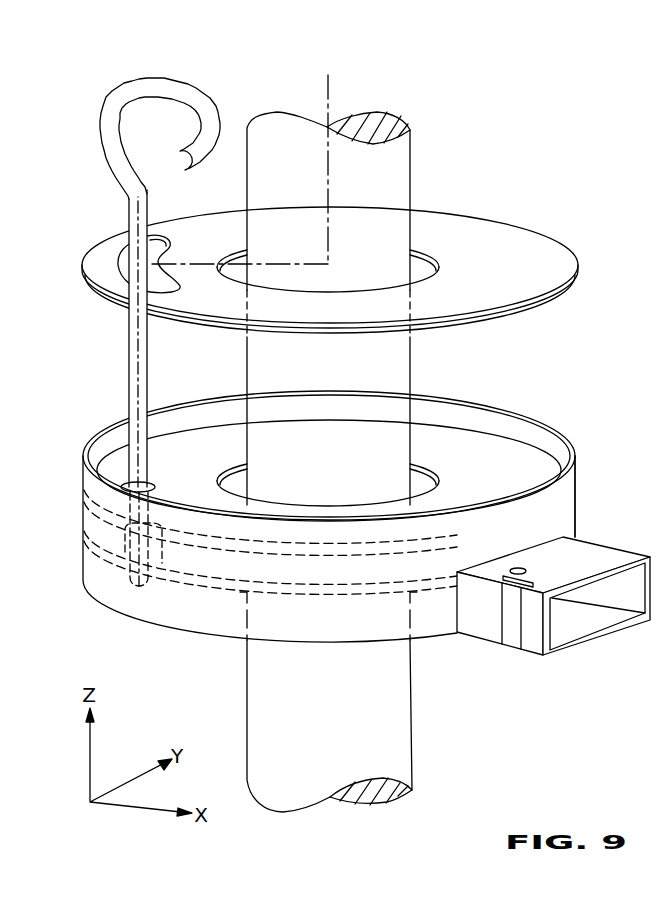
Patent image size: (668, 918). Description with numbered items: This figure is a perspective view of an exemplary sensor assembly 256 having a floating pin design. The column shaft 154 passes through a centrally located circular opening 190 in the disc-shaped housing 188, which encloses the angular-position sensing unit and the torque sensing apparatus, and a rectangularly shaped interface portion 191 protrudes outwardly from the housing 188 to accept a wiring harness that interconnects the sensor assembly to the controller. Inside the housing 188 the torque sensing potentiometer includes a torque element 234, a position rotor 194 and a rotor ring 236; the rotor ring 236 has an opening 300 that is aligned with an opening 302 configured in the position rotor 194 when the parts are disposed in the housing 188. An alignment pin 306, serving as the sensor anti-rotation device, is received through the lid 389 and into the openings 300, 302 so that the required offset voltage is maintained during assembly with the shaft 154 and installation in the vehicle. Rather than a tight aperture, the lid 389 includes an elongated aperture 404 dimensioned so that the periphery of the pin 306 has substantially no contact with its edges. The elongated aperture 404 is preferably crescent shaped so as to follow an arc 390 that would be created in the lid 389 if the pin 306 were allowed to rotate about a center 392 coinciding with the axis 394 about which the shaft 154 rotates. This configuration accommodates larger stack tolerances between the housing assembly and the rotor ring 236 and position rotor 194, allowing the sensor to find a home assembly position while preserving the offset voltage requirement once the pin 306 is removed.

The column shaft 154 is at (398, 160).
The housing 188 is at (82, 497).
The circular opening 190 is at (405, 485).
The interface portion 191 is at (602, 557).
The position rotor 194 is at (104, 546).
The torque element 234 is at (580, 492).
The rotor ring 236 is at (528, 463).
The sensor assembly 256 is at (617, 647).
The opening 300 is at (140, 487).
The opening 302 is at (144, 592).
The alignment pin 306 is at (132, 207).
The lid 389 is at (522, 247).
The arc 390 is at (160, 222).
The center 392 is at (328, 264).
The axis 394 is at (330, 97).
The elongated aperture 404 is at (125, 265).